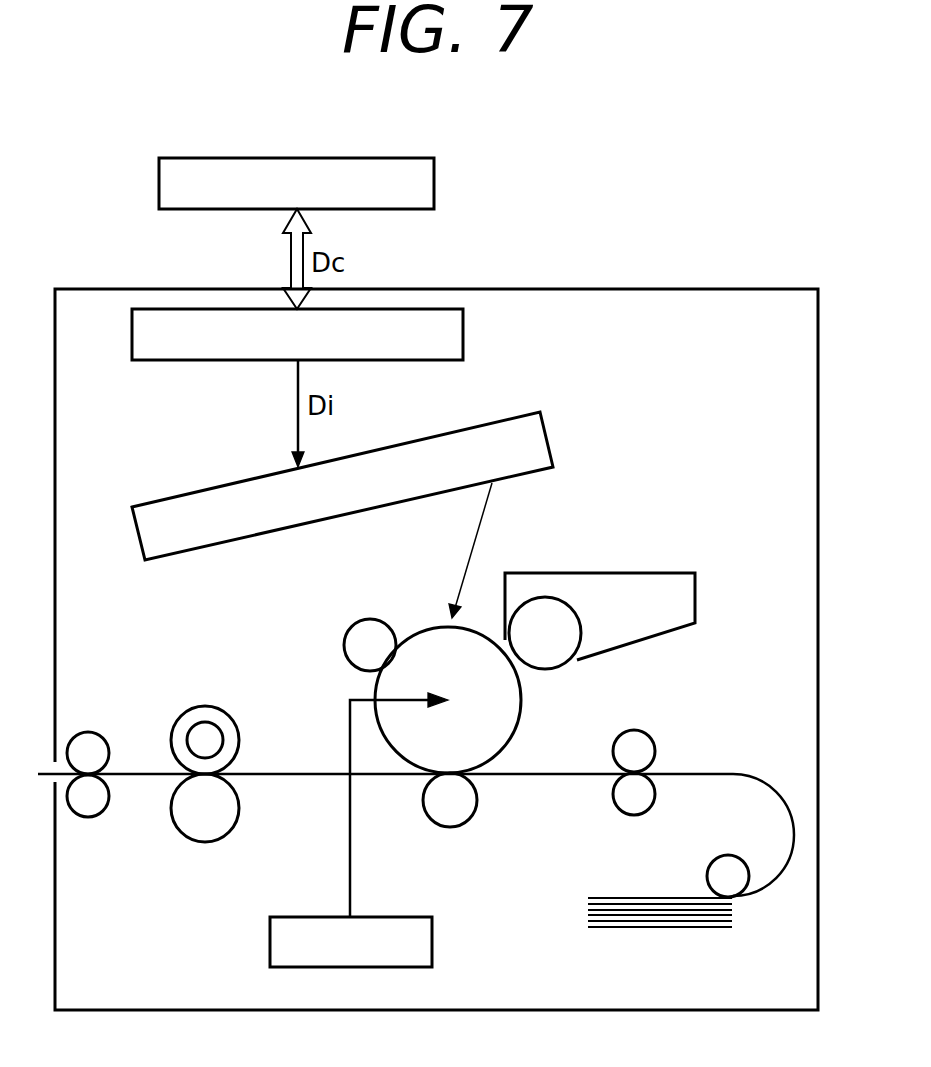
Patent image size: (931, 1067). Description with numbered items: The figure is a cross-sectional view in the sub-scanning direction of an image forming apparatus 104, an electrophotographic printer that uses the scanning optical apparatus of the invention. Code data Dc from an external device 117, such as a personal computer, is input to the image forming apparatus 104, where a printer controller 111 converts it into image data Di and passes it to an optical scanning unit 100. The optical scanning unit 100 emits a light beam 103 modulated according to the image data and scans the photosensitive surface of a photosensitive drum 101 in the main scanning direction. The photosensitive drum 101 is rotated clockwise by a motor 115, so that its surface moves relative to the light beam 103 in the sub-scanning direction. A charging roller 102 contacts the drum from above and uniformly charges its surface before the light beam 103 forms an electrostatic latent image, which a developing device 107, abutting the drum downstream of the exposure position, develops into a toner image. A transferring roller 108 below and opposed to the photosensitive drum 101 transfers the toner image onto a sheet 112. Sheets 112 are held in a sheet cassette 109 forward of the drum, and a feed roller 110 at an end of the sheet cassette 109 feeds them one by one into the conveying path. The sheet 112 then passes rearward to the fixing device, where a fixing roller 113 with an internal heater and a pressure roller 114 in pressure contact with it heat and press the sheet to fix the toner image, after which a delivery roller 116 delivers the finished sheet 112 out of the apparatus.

The optical scanning unit 100 is at (192, 488).
The photosensitive drum 101 is at (512, 717).
The charging roller 102 is at (363, 626).
The light beam 103 is at (478, 537).
The image forming apparatus 104 is at (602, 288).
The developing device 107 is at (630, 580).
The transferring roller 108 is at (467, 797).
The sheet cassette 109 is at (657, 928).
The feed roller 110 is at (733, 858).
The printer controller 111 is at (463, 336).
The sheet 112 is at (317, 773).
The fixing roller 113 is at (213, 717).
The pressure roller 114 is at (202, 833).
The motor 115 is at (388, 917).
The delivery roller 116 is at (90, 740).
The external device 117 is at (400, 158).